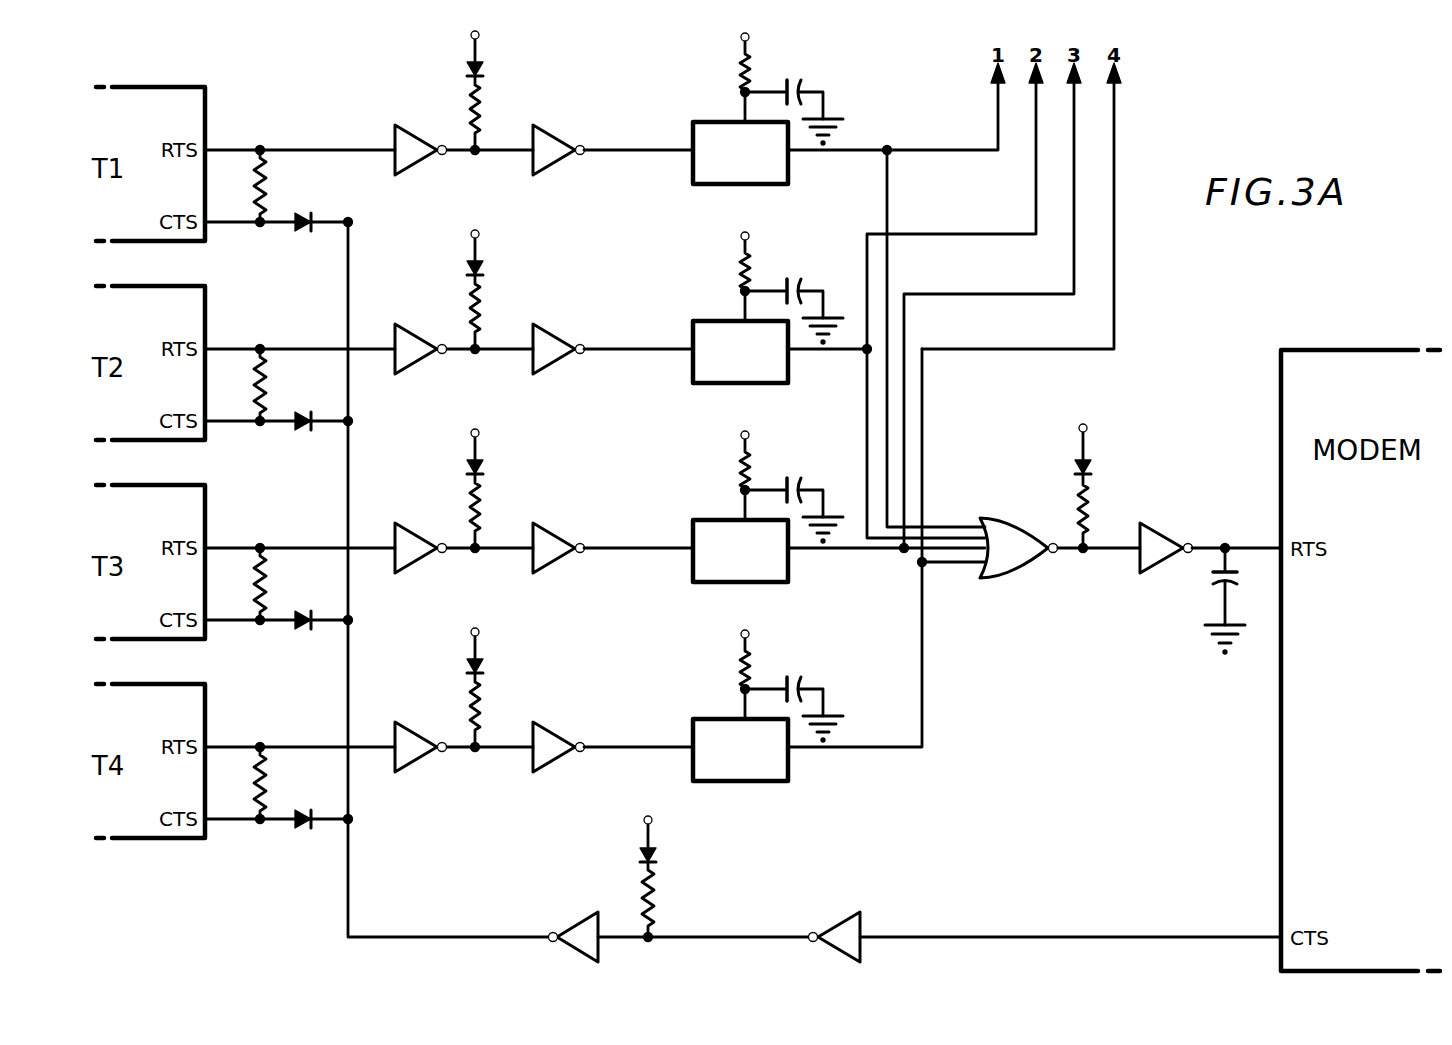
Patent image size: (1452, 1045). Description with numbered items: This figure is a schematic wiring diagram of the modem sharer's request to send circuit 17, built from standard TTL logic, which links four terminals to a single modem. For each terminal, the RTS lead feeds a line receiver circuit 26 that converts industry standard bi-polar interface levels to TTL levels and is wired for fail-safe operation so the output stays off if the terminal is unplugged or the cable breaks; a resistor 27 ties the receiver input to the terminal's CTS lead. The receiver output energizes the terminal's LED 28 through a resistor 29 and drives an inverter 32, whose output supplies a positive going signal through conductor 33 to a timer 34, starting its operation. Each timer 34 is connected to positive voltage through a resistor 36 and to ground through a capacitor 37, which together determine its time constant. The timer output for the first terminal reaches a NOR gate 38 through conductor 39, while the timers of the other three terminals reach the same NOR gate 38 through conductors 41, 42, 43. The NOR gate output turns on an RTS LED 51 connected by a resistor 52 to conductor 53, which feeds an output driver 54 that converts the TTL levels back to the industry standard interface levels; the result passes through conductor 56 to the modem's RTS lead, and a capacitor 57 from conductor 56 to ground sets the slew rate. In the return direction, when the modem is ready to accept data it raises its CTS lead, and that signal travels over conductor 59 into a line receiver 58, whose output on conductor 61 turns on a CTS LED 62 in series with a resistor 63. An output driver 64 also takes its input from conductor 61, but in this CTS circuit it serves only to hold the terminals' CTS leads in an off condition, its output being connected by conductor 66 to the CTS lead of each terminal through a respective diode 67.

The request to send circuit 17 is at (1022, 660).
The line receiver circuit 26 is at (434, 140).
The resistor 27 is at (268, 190).
The LED 28 is at (467, 72).
The resistor 29 is at (483, 110).
The inverter 32 is at (564, 142).
The conductor 33 is at (649, 149).
The timer 34 is at (718, 122).
The resistor 36 is at (738, 65).
The capacitor 37 is at (803, 85).
The NOR gate 38 is at (1006, 518).
The conductor 39 is at (866, 150).
The conductor 41 is at (837, 352).
The conductor 42 is at (850, 550).
The conductor 43 is at (878, 750).
The RTS LED 51 is at (1073, 470).
The resistor 52 is at (1075, 513).
The conductor 53 is at (1109, 550).
The output driver 54 is at (1160, 528).
The conductor 56 is at (1205, 546).
The capacitor 57 is at (1215, 588).
The line receiver 58 is at (835, 922).
The conductor 59 is at (1000, 932).
The conductor 61 is at (627, 935).
The CTS LED 62 is at (643, 852).
The resistor 63 is at (660, 898).
The output driver 64 is at (570, 926).
The conductor 66 is at (350, 582).
The diode 67 is at (301, 232).